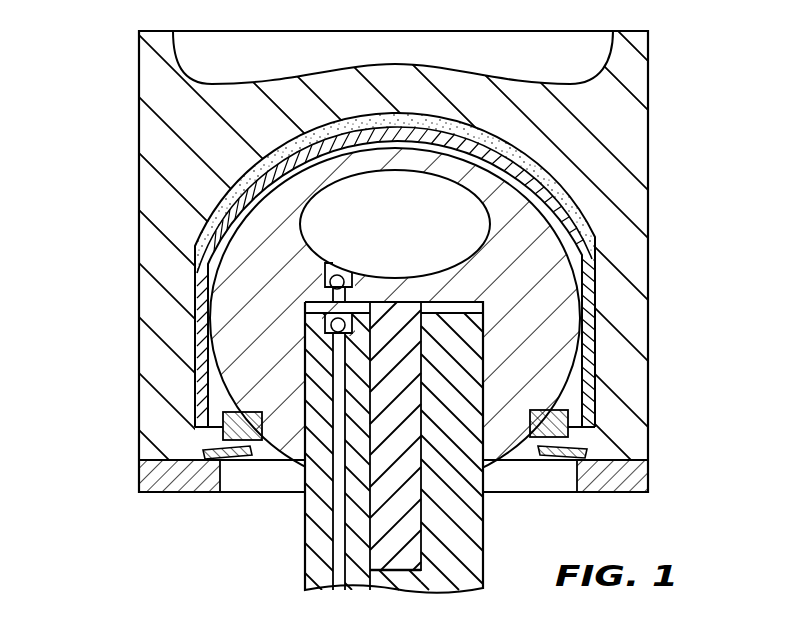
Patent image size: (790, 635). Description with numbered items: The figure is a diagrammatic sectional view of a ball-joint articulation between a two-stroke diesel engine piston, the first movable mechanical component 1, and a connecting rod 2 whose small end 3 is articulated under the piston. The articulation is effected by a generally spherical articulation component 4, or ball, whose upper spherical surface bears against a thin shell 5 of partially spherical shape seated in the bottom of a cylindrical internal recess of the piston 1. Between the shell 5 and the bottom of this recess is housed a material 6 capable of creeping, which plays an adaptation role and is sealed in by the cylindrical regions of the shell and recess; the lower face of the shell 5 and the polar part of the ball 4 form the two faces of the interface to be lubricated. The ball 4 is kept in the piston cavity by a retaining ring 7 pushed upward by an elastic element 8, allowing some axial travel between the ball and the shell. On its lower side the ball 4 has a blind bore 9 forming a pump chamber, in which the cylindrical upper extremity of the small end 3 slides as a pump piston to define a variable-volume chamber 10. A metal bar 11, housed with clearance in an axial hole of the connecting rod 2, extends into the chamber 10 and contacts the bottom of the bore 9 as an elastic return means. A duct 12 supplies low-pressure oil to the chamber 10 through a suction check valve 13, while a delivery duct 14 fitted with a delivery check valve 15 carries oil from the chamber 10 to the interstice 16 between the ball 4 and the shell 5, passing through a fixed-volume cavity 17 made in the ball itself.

The first movable mechanical component 1 is at (178, 86).
The connecting rod 2 is at (318, 419).
The small end 3 is at (455, 385).
The articulation component 4 is at (425, 318).
The thin shell 5 is at (592, 203).
The material capable of creeping 6 is at (431, 272).
The retaining ring 7 is at (560, 415).
The elastic element 8 is at (588, 452).
The blind bore 9 is at (305, 405).
The chamber 10 is at (592, 268).
The metal bar 11 is at (400, 480).
The duct 12 is at (338, 506).
The suction check valve 13 is at (323, 322).
The duct 14 is at (323, 290).
The delivery check valve 15 is at (325, 272).
The interstice 16 is at (262, 148).
The cavity 17 is at (335, 223).